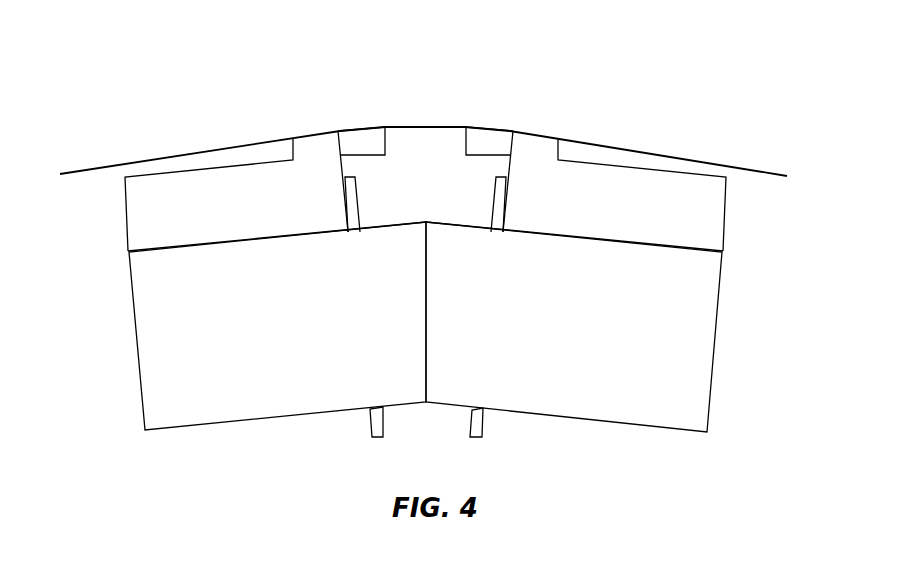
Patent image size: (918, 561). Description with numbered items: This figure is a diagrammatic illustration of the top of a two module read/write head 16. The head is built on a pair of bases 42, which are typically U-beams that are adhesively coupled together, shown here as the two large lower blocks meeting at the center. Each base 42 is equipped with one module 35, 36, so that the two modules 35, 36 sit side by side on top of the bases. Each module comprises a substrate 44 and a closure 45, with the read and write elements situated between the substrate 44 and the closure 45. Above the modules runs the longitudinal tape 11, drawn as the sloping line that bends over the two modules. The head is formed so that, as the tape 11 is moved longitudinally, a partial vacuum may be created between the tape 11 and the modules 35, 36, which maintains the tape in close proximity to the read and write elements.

The two module read/write head 16 is at (214, 92).
The longitudinal tape 11 is at (653, 152).
The module 35 is at (335, 122).
The module 36 is at (516, 122).
The substrate 44 is at (128, 227).
The closure 45 is at (357, 156).
The base 42 is at (138, 338).